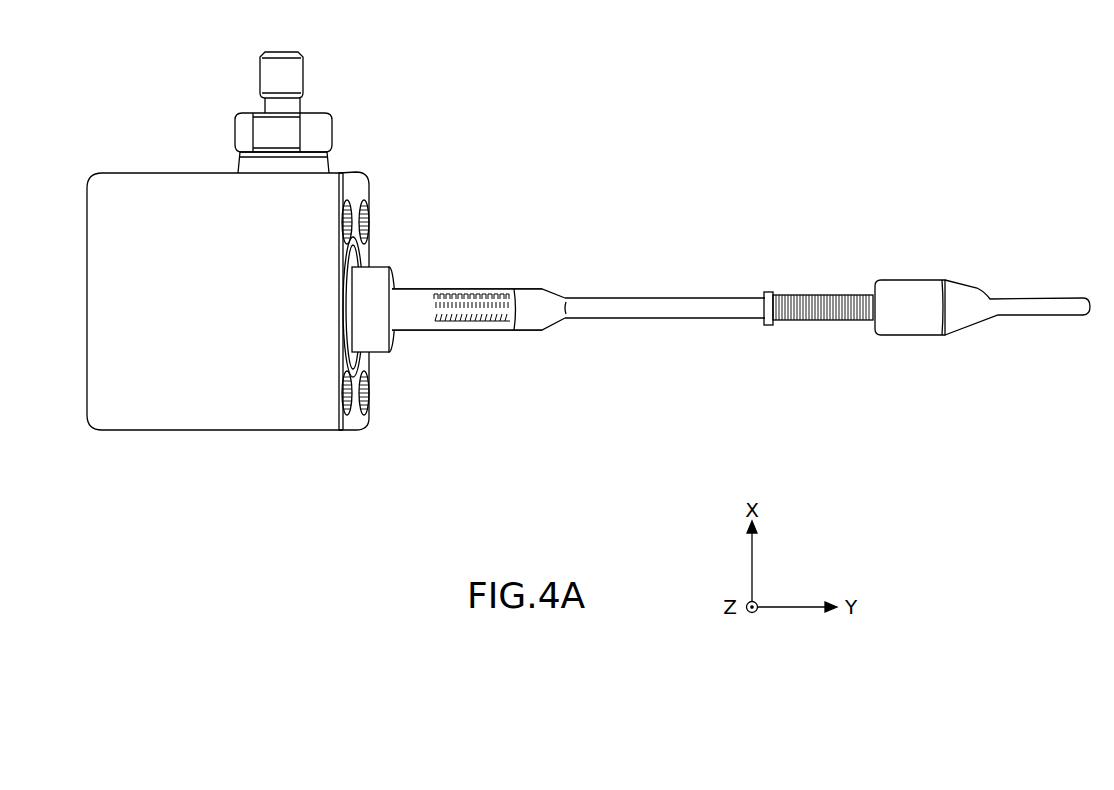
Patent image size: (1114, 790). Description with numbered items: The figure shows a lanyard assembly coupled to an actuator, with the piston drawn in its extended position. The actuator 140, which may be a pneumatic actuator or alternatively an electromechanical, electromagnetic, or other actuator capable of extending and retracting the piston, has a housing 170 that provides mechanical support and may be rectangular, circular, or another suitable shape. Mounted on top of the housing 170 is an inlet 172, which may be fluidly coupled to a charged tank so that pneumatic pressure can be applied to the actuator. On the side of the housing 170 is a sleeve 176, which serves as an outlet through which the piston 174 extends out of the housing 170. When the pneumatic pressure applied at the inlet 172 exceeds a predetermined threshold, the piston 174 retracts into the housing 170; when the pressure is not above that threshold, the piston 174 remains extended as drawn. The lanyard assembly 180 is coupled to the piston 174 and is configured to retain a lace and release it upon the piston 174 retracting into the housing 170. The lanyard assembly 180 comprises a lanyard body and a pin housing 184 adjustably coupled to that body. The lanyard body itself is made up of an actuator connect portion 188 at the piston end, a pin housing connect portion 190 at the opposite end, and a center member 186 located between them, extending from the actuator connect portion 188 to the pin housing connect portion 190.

The actuator 140 is at (588, 241).
The housing 170 is at (185, 306).
The inlet 172 is at (323, 133).
The piston 174 is at (476, 350).
The sleeve 176 is at (374, 275).
The lanyard assembly 180 is at (738, 314).
The pin housing 184 is at (982, 338).
The center member 186 is at (618, 312).
The actuator connect portion 188 is at (487, 312).
The pin housing connect portion 190 is at (812, 318).